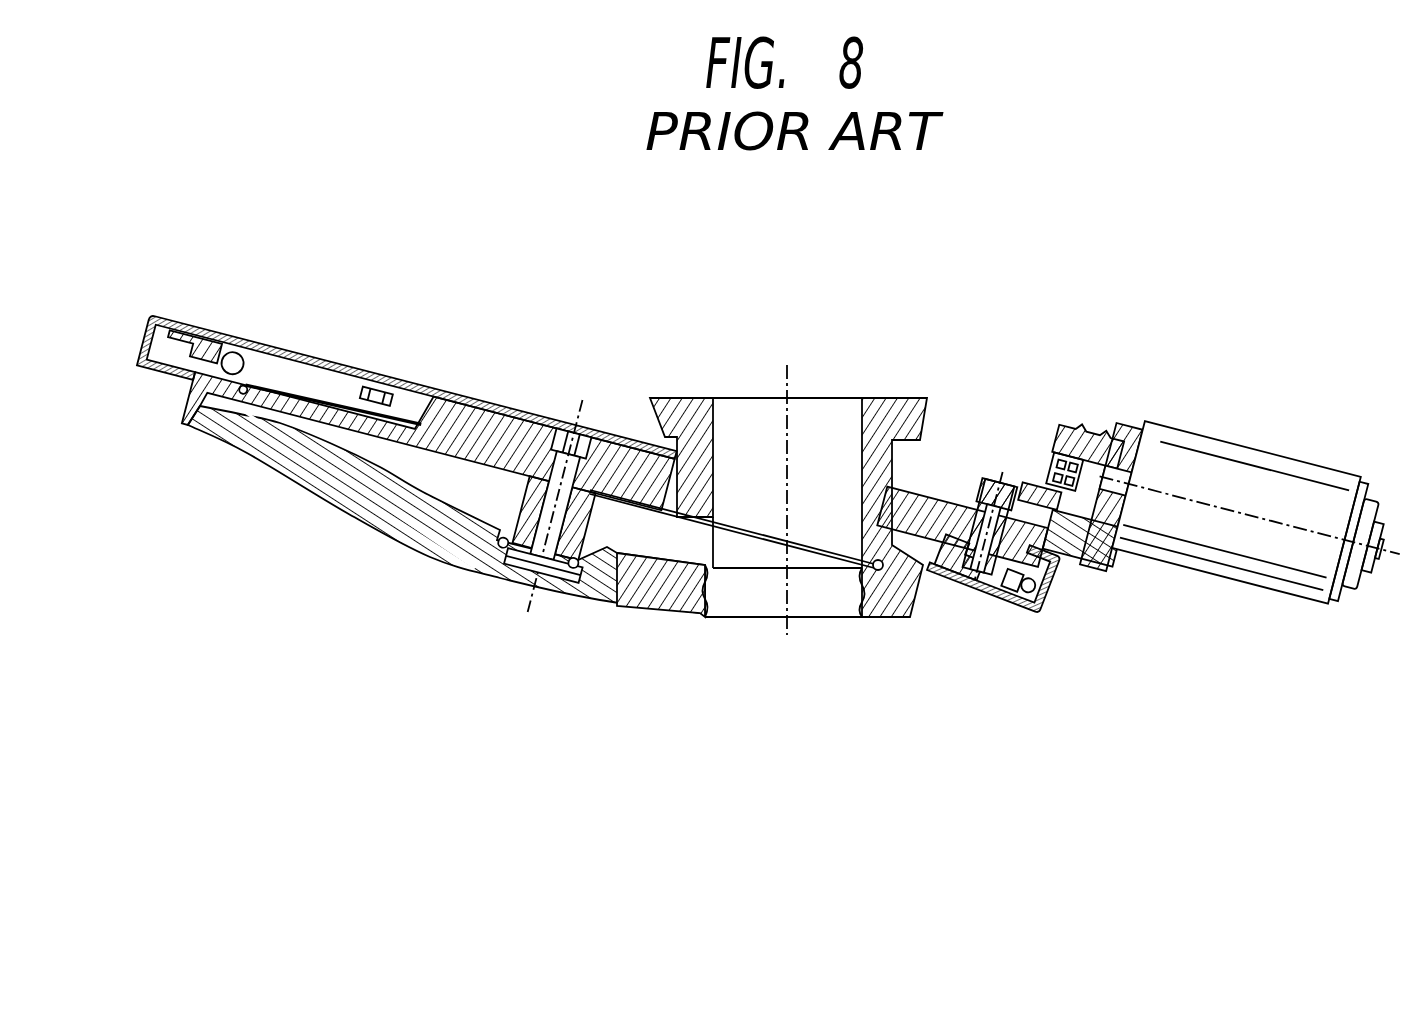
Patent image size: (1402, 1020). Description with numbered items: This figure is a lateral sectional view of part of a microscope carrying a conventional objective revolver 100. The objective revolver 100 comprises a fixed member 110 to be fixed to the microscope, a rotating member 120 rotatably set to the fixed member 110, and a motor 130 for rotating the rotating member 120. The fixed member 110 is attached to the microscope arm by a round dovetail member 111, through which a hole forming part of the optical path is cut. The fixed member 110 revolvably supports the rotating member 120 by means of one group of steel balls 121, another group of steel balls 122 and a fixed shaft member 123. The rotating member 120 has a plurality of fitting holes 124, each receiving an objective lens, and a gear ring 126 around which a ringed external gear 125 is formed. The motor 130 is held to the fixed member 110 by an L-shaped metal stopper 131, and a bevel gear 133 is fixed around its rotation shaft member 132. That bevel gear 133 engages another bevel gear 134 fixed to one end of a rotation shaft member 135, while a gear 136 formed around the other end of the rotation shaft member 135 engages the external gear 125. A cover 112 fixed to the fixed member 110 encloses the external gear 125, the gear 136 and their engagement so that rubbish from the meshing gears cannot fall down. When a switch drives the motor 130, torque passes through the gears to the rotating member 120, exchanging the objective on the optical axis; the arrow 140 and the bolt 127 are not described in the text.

The objective revolver 100 is at (838, 308).
The fixed member 110 is at (500, 428).
The round dovetail member 111 is at (900, 397).
The cover 112 is at (148, 366).
The rotating member 120 is at (405, 522).
The steel balls 121 is at (500, 545).
The steel balls 122 is at (240, 400).
The fixed shaft member 123 is at (520, 590).
The fitting holes 124 is at (708, 600).
The external gear 125 is at (190, 320).
The gear ring 126 is at (927, 500).
The bolt 127 is at (558, 590).
The motor 130 is at (1275, 477).
The L-shaped metal stopper 131 is at (1135, 415).
The rotation shaft member 132 is at (1045, 447).
The bevel gear 133 is at (1087, 440).
The bevel gear 134 is at (990, 477).
The rotation shaft member 135 is at (1017, 605).
The gear 136 is at (985, 605).
The hinge assembly 140 is at (184, 382).